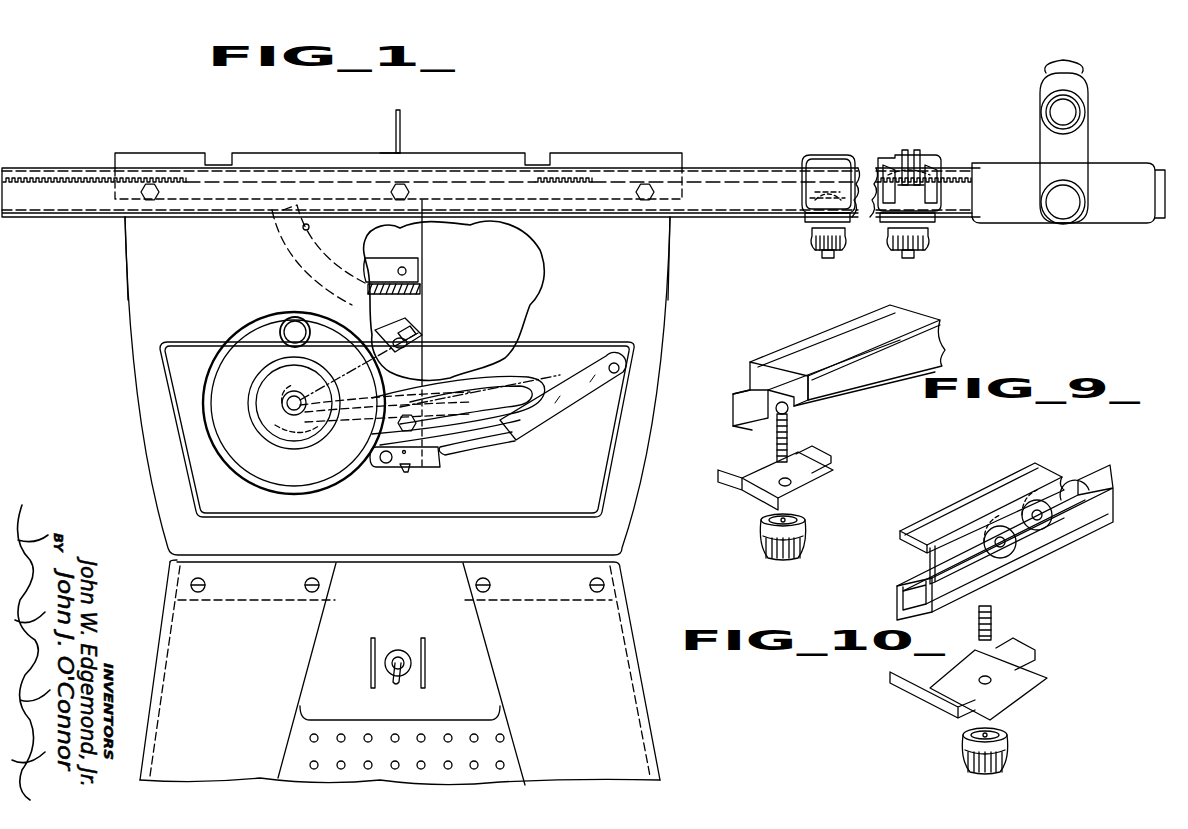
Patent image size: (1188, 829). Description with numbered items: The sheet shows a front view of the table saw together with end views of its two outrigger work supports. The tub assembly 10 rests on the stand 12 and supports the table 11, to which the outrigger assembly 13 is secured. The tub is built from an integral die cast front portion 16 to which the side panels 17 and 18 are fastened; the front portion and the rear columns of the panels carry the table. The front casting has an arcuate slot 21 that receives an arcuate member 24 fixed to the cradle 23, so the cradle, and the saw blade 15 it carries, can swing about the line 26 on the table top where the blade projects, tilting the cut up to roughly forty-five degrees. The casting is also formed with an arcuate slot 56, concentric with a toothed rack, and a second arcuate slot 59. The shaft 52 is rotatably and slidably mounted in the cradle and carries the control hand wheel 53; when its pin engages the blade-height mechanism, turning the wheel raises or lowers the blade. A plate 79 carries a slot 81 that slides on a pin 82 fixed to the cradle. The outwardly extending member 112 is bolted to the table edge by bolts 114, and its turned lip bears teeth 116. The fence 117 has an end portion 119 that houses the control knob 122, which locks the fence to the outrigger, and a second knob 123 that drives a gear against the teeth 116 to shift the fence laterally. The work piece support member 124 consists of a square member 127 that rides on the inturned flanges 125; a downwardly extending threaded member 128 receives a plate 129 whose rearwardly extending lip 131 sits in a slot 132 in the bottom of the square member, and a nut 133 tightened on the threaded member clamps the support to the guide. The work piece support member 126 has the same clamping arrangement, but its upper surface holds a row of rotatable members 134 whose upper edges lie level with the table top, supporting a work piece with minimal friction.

In FIG. 1, the tub assembly 10 is at (140, 322).
In FIG. 1, the table 11 is at (262, 160).
In FIG. 1, the stand 12 is at (645, 734).
In FIG. 1, the outrigger assembly 13 is at (706, 165).
In FIG. 1, the saw blade 15 is at (400, 118).
In FIG. 1, the integral die cast front portion 16 is at (160, 290).
In FIG. 1, the side panel 17 is at (160, 348).
In FIG. 1, the side panel 18 is at (660, 330).
In FIG. 1, the arcuate slot 21 is at (414, 252).
In FIG. 1, the cradle 23 is at (421, 294).
In FIG. 1, the arcuate member 24 is at (410, 272).
In FIG. 1, the line 26 is at (392, 153).
In FIG. 1, the shaft 52 is at (290, 414).
In FIG. 1, the control hand wheel 53 is at (247, 338).
In FIG. 1, the arcuate slot 56 is at (522, 386).
In FIG. 1, the second arcuate slot 59 is at (480, 447).
In FIG. 1, the plate 79 is at (386, 326).
In FIG. 1, the slot 81 is at (414, 331).
In FIG. 1, the pin 82 is at (410, 344).
In FIG. 1, the outwardly extending member 112 is at (66, 173).
In FIG. 1, the bolts 114 is at (401, 183).
In FIG. 1, the teeth 116 is at (35, 185).
In FIG. 1, the fence 117 is at (1082, 86).
In FIG. 1, the end portion 119 is at (1086, 148).
In FIG. 1, the control knob 122 is at (1082, 112).
In FIG. 1, the second knob 123 is at (1070, 215).
In FIG. 1, the work piece support member 124 is at (838, 152).
In FIG. 9, the work piece support member 124 is at (945, 325).
In FIG. 1, the inturned flanges 125 is at (705, 218).
In FIG. 10, the inturned flanges 125 is at (926, 557).
In FIG. 1, the work piece support member 126 is at (946, 154).
In FIG. 10, the work piece support member 126 is at (977, 490).
In FIG. 1, the square member 127 is at (810, 158).
In FIG. 9, the square member 127 is at (876, 386).
In FIG. 1, the threaded member 128 is at (820, 257).
In FIG. 9, the threaded member 128 is at (776, 451).
In FIG. 10, the threaded member 128 is at (994, 620).
In FIG. 1, the plate 129 is at (803, 220).
In FIG. 9, the plate 129 is at (806, 488).
In FIG. 10, the plate 129 is at (1012, 698).
In FIG. 9, the rearwardly extending lip 131 is at (814, 454).
In FIG. 10, the rearwardly extending lip 131 is at (1026, 652).
In FIG. 9, the slot 132 is at (806, 391).
In FIG. 1, the nut 133 is at (812, 247).
In FIG. 9, the nut 133 is at (807, 541).
In FIG. 10, the nut 133 is at (1008, 753).
In FIG. 1, the rotatable members 134 is at (912, 155).
In FIG. 10, the rotatable members 134 is at (1084, 482).